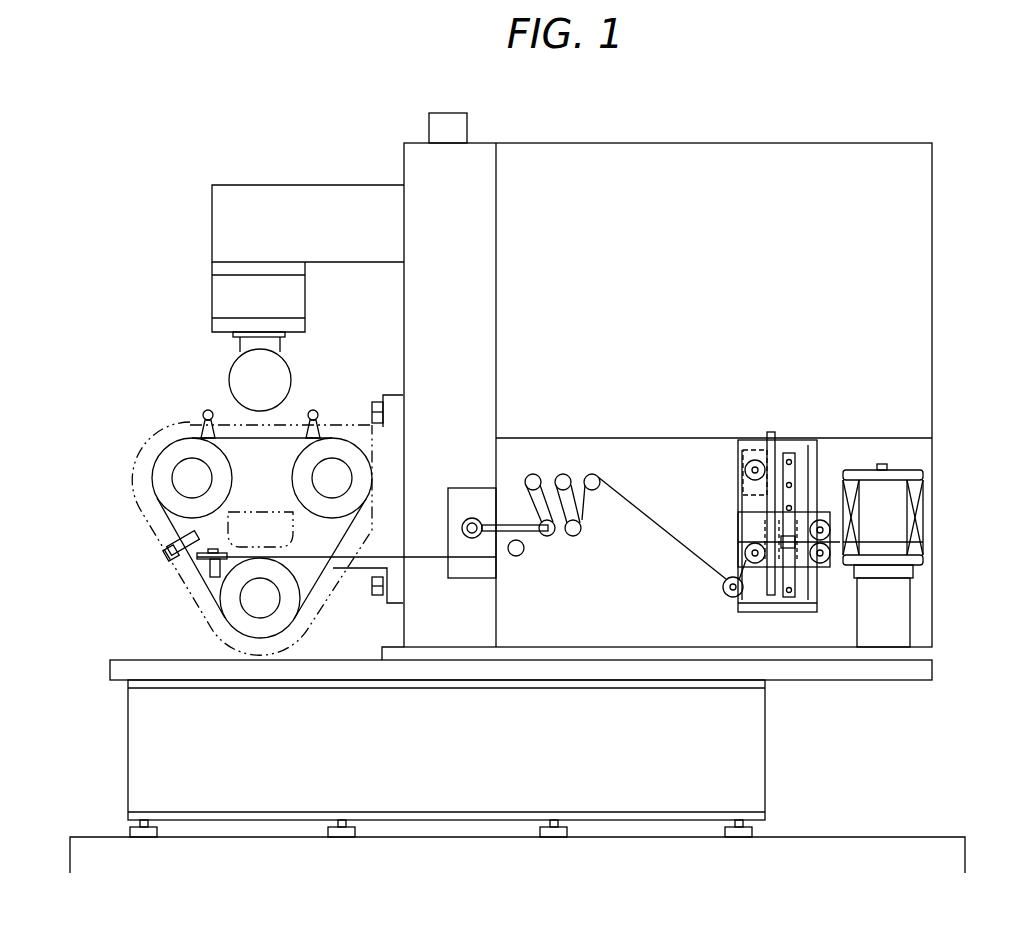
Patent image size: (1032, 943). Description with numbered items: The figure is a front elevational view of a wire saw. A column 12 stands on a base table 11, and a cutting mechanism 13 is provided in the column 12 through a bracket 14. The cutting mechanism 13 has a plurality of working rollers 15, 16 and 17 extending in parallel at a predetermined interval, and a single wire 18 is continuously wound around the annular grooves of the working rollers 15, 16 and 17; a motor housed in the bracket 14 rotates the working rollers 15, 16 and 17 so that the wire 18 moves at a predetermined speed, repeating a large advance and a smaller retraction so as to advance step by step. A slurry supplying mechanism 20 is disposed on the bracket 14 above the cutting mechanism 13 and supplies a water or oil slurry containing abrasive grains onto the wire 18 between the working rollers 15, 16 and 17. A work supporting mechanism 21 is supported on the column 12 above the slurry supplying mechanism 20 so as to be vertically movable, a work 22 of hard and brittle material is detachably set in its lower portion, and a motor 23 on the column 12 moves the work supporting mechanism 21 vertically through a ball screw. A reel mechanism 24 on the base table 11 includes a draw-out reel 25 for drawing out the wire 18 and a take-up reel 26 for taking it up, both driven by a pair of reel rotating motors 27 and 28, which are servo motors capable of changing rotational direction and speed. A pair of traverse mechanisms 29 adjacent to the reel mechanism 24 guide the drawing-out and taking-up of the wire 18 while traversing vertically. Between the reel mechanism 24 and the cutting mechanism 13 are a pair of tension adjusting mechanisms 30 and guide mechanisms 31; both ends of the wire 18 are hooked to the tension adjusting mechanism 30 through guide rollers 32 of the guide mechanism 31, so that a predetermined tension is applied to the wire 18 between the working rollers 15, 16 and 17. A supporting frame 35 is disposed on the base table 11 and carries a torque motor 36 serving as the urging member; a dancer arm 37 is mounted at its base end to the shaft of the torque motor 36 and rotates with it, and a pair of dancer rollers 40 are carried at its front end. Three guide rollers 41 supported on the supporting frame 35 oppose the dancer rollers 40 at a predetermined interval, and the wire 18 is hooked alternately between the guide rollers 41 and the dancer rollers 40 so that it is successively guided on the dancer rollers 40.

The base table 11 is at (125, 662).
The column 12 is at (480, 316).
The cutting mechanism 13 is at (133, 456).
The bracket 14 is at (130, 515).
The working roller 15 is at (215, 490).
The working roller 16 is at (368, 498).
The working roller 17 is at (282, 625).
The wire 18 is at (268, 440).
The slurry supplying mechanism 20 is at (205, 410).
The work supporting mechanism 21 is at (212, 243).
The work 22 is at (287, 370).
The motor 23 is at (458, 130).
The reel mechanism 24 is at (942, 476).
The draw-out reel 25 is at (923, 560).
The take-up reel 26 is at (977, 581).
The reel rotating motor 27 is at (900, 632).
The reel rotating motor 28 is at (977, 659).
The traverse mechanism 29 is at (800, 432).
The tension adjusting mechanism 30 is at (615, 480).
The guide mechanism 31 is at (505, 566).
The guide roller 32 is at (203, 574).
The supporting frame 35 is at (547, 438).
The torque motor 36 is at (472, 518).
The dancer arm 37 is at (512, 523).
The dancer roller 40 is at (547, 538).
The guide roller 41 is at (533, 473).